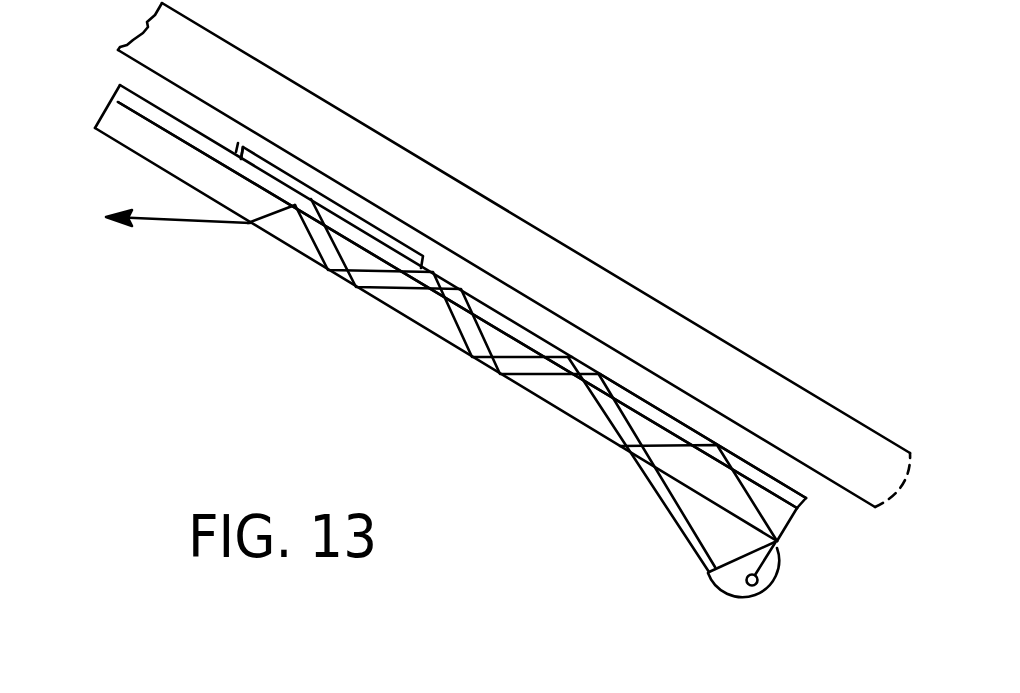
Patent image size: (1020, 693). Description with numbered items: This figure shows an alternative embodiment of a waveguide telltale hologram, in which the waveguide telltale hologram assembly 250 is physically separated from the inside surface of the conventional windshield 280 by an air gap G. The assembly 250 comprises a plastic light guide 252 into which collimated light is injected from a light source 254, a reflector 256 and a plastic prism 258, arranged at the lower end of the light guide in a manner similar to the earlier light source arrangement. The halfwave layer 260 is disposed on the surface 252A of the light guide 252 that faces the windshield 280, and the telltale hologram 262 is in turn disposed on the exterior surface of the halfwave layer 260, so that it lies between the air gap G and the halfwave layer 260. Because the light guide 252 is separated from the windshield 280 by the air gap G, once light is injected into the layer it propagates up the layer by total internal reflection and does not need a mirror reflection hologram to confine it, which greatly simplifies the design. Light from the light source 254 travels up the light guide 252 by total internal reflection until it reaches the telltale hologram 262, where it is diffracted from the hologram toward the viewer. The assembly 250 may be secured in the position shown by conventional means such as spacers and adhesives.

The waveguide telltale hologram assembly 250 is at (420, 388).
The plastic light guide 252 is at (142, 158).
The surface of the light guide 252A is at (120, 104).
The light source 254 is at (758, 580).
The reflector 256 is at (736, 595).
The plastic prism 258 is at (668, 492).
The halfwave layer 260 is at (692, 430).
The telltale hologram 262 is at (428, 262).
The windshield 280 is at (725, 343).
The air gap G is at (262, 147).